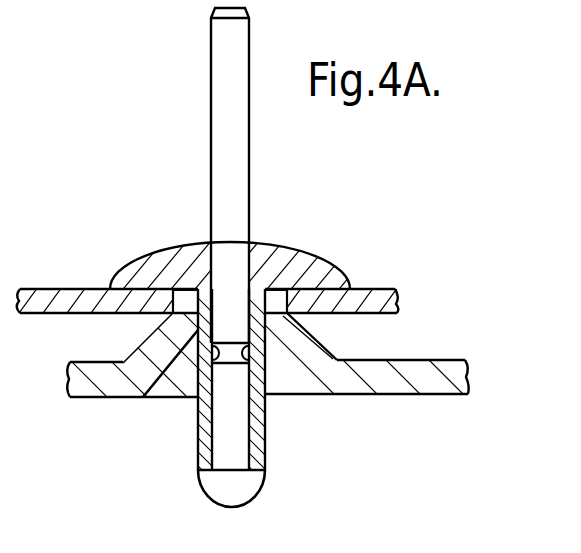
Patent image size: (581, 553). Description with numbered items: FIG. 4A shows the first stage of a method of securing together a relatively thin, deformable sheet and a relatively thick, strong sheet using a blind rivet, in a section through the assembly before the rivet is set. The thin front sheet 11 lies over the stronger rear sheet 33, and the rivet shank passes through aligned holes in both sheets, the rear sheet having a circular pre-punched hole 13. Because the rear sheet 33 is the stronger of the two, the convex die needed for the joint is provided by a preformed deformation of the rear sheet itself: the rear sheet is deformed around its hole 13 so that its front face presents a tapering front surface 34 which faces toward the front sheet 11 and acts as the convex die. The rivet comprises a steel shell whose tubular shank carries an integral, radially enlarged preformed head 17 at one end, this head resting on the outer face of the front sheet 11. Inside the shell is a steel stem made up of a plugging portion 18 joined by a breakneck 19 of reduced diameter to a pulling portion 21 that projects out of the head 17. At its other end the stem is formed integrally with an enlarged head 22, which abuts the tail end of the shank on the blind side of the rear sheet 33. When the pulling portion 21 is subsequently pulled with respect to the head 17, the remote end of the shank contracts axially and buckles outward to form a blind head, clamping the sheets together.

The front sheet 11 is at (383, 298).
The pre-punched hole 13 is at (192, 318).
The preformed head 17 is at (290, 255).
The plugging portion 18 is at (238, 444).
The breakneck 19 is at (200, 399).
The pulling portion 21 is at (242, 175).
The enlarged head 22 is at (217, 487).
The rear sheet 33 is at (453, 372).
The tapering front surface 34 is at (322, 347).